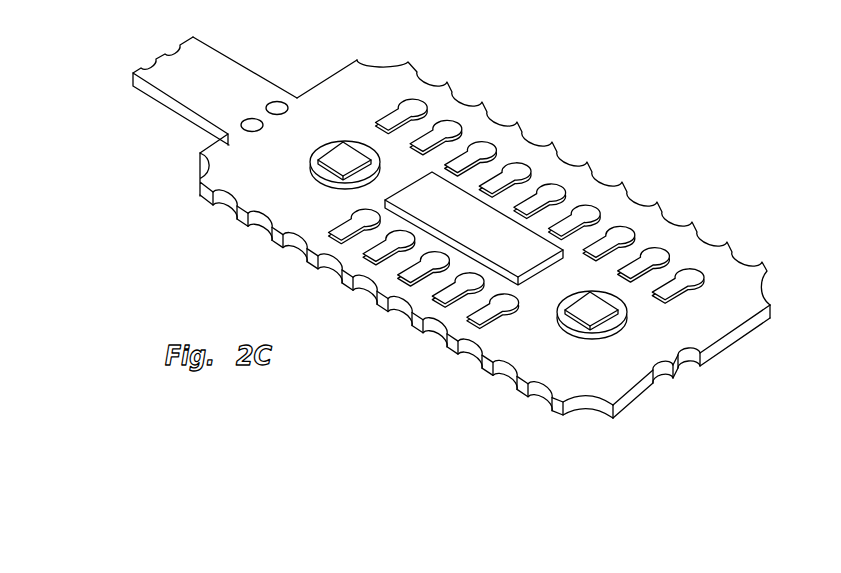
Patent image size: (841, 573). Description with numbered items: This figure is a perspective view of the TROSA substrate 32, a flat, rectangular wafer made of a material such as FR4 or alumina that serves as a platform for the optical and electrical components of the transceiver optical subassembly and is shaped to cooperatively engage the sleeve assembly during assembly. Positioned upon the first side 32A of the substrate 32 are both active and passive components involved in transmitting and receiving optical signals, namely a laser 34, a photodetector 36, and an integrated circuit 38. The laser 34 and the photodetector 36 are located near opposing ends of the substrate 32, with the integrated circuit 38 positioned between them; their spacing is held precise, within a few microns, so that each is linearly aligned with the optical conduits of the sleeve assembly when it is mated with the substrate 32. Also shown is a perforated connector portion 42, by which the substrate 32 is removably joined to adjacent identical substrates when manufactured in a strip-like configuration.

The substrate 32 is at (693, 325).
The first side 32A is at (388, 83).
The laser 34 is at (337, 159).
The photodetector 36 is at (587, 310).
The integrated circuit 38 is at (478, 217).
The perforated connector portion 42 is at (193, 90).